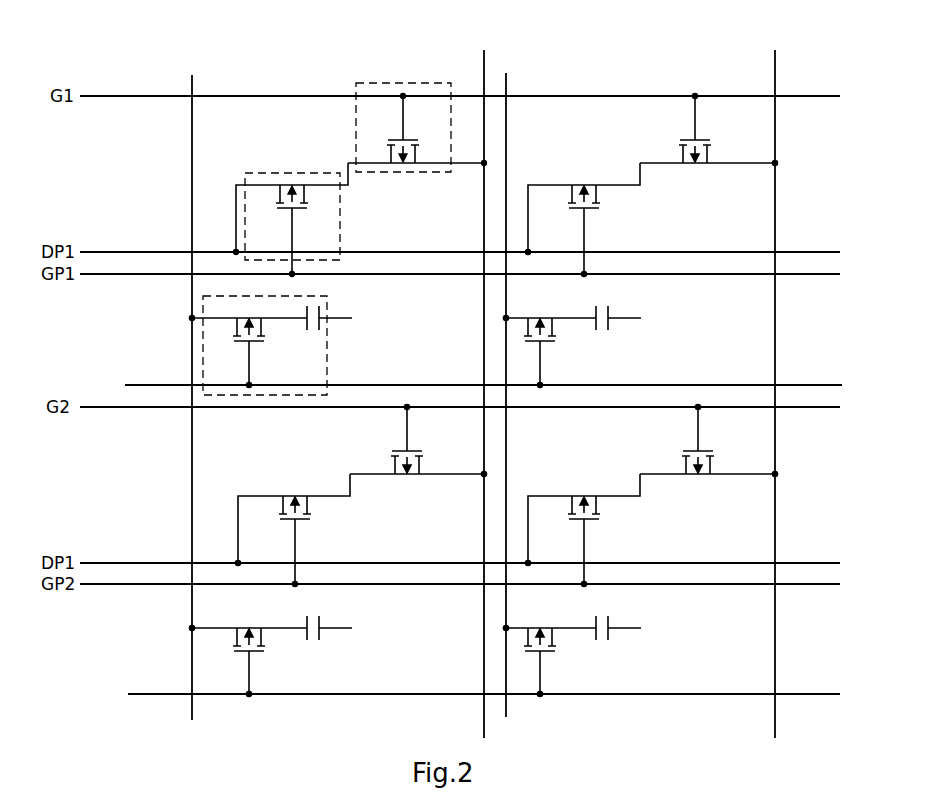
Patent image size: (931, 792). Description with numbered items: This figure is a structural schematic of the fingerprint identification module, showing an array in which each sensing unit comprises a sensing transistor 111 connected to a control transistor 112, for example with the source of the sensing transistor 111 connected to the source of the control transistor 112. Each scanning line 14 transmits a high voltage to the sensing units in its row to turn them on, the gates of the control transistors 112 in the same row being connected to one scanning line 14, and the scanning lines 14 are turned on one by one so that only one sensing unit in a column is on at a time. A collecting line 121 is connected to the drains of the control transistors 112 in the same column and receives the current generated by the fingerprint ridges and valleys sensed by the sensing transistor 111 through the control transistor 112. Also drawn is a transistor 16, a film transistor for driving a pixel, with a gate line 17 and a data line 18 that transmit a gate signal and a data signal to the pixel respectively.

The scanning line 14 is at (147, 97).
The data line 18 is at (192, 97).
The sensing transistor 111 is at (298, 173).
The control transistor 112 is at (406, 82).
The collecting line 121 is at (484, 64).
The transistor 16 is at (203, 341).
The gate line 17 is at (145, 386).